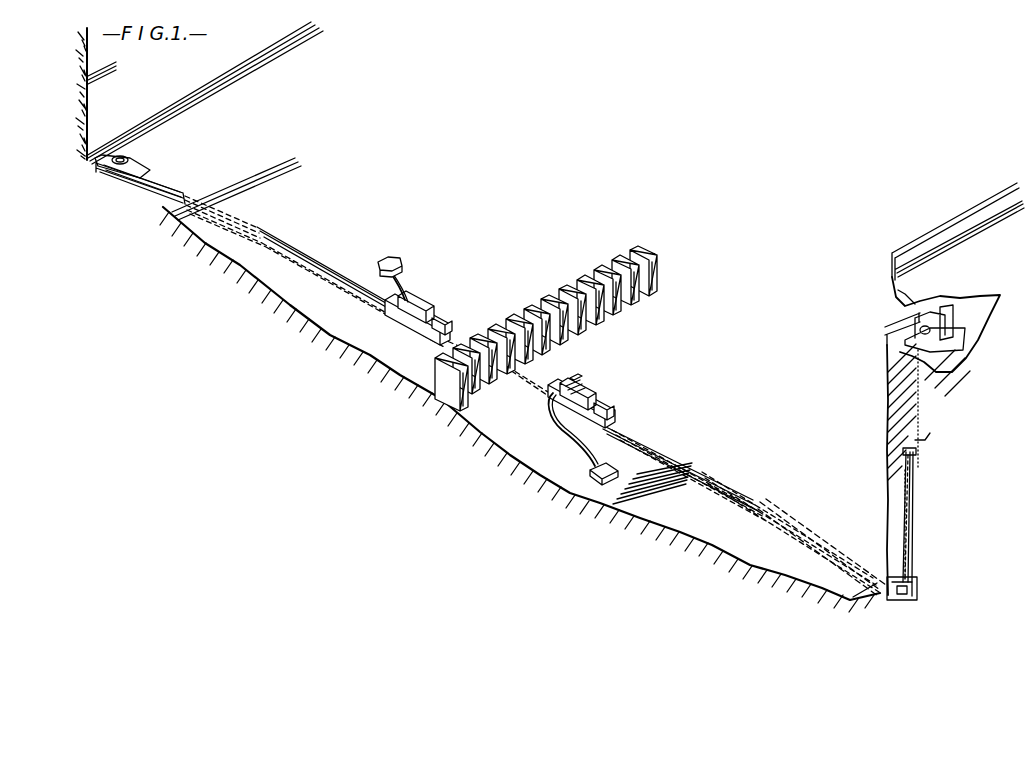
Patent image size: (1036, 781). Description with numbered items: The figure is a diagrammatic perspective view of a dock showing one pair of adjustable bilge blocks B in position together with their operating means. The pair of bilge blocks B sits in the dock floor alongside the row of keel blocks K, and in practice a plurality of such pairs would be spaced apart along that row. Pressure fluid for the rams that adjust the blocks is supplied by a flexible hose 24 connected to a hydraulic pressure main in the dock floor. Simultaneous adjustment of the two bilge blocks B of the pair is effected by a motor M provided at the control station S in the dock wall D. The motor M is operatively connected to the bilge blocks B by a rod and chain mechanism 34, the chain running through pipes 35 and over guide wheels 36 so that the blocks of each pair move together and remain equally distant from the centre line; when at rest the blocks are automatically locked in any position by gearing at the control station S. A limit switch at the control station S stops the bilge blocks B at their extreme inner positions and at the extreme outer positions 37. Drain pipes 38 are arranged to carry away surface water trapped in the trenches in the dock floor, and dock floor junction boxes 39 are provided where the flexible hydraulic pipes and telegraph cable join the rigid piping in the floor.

The flexible hose 24 is at (413, 287).
The rod and chain mechanism 34 is at (132, 163).
The pipes 35 is at (171, 182).
The guide wheels 36 is at (123, 164).
The extreme outer positions 37 is at (282, 258).
The drain pipes 38 is at (151, 187).
The dock floor junction boxes 39 is at (404, 257).
The bilge blocks B is at (427, 296).
The keel blocks K is at (450, 390).
The control station S is at (922, 313).
The motor M is at (978, 343).
The dock wall D is at (890, 384).